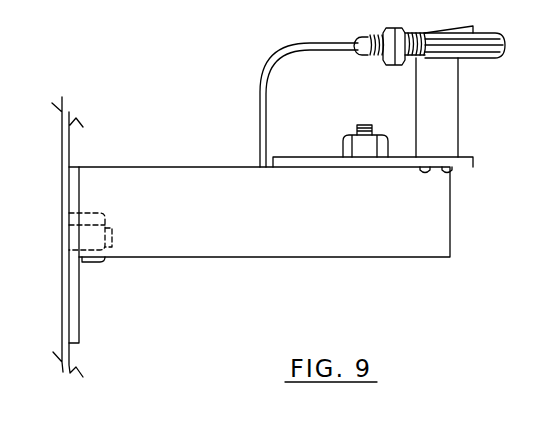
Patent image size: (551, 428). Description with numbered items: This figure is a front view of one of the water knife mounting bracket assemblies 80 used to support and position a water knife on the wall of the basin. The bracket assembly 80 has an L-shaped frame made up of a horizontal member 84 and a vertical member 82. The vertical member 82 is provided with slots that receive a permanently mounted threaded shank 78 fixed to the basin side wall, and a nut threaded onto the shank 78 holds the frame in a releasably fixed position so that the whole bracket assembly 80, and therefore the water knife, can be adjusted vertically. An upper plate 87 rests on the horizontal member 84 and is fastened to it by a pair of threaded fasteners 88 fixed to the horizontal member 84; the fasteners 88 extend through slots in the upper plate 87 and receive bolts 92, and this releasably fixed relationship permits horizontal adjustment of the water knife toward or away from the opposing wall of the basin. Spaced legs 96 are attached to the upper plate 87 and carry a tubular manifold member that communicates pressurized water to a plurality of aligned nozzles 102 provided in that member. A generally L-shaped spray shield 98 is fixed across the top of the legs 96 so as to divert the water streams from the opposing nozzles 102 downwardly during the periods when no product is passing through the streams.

The threaded shank 78 is at (113, 238).
The water knife mounting bracket assembly 80 is at (426, 267).
The vertical member 82 is at (77, 306).
The horizontal member 84 is at (245, 248).
The upper plate 87 is at (282, 156).
The threaded fastener 88 is at (369, 125).
The bolt 92 is at (347, 153).
The leg 96 is at (440, 100).
The spray shield 98 is at (264, 73).
The nozzle 102 is at (393, 28).